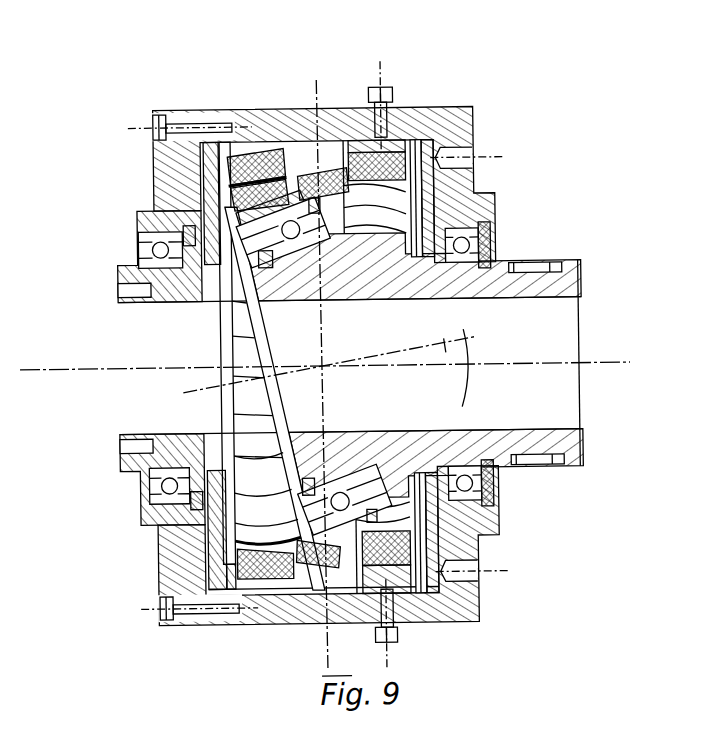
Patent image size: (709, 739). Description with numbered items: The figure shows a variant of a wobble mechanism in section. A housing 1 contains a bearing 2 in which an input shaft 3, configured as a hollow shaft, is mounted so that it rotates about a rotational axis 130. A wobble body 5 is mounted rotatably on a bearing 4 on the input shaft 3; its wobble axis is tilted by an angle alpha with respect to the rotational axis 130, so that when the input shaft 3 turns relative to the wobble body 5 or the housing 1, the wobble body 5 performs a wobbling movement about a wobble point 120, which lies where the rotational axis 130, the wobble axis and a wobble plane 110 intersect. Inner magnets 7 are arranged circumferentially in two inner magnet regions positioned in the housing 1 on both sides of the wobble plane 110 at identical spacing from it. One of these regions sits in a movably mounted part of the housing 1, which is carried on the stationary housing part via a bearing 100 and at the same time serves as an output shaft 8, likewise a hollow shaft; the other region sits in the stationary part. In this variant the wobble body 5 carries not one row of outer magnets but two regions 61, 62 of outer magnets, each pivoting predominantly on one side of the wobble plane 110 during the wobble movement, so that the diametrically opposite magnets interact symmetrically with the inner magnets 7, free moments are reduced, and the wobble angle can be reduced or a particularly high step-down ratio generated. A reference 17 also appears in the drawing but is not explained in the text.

The housing 1 is at (221, 144).
The bearing 2 is at (482, 225).
The input shaft 3 is at (566, 281).
The bearing 4 is at (478, 555).
The wobble body 5 is at (225, 217).
The inner magnets 7 is at (245, 501).
The output shaft 8 is at (118, 270).
The pin 17 is at (392, 216).
The region of outer magnets 61 is at (241, 157).
The region of outer magnets 62 is at (321, 169).
The bearing 100 is at (150, 220).
The wobble plane 110 is at (257, 146).
The wobble point 120 is at (365, 140).
The rotational axis 130 is at (603, 367).